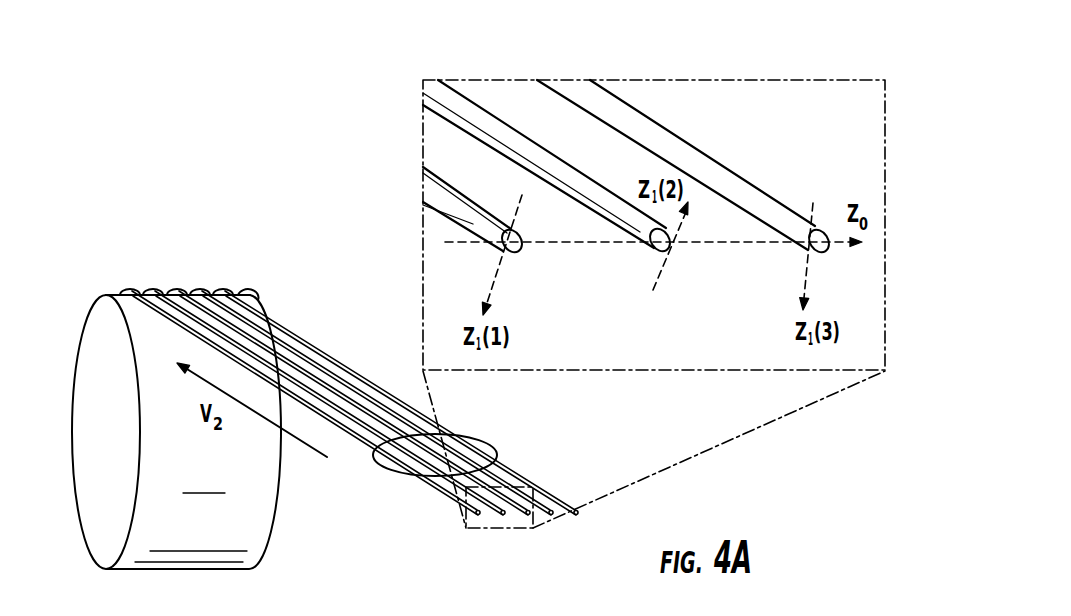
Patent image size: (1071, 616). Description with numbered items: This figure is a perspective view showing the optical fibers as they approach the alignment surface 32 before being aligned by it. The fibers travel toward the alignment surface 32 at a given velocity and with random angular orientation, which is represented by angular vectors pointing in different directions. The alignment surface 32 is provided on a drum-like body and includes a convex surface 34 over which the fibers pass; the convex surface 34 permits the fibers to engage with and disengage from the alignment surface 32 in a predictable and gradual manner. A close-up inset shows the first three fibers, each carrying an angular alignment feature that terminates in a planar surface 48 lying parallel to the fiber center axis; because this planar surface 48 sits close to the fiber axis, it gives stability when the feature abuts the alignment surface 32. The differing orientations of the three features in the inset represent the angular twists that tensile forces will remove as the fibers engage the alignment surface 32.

The alignment surface 32 is at (78, 334).
The convex surface 34 is at (127, 307).
The planar surface 48 is at (377, 362).